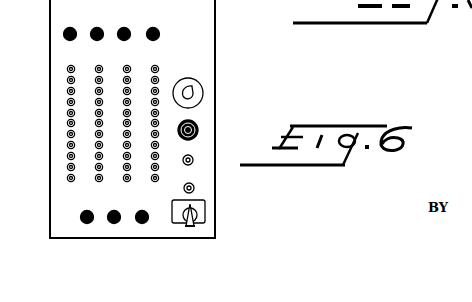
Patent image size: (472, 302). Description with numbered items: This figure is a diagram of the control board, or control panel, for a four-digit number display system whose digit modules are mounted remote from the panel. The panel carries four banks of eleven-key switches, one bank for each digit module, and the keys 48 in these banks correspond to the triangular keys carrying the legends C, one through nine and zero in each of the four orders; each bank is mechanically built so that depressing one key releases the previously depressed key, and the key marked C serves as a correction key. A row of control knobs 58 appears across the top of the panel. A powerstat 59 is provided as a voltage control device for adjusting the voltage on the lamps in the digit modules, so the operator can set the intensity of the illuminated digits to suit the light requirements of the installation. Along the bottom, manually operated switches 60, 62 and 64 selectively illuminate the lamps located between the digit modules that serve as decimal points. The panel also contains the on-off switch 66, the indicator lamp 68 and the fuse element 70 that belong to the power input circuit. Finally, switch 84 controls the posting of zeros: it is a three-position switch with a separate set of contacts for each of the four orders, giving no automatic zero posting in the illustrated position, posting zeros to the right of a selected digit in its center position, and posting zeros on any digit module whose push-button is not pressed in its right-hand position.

The keys 48 is at (68, 69).
The control knobs 58 is at (153, 28).
The powerstat 59 is at (193, 94).
The manually operated switch 60 is at (90, 223).
The manually operated switch 62 is at (117, 223).
The manually operated switch 64 is at (147, 223).
The on-off switch 66 is at (194, 157).
The indicator lamp 68 is at (198, 130).
The fuse element 70 is at (195, 187).
The switch 84 is at (205, 217).